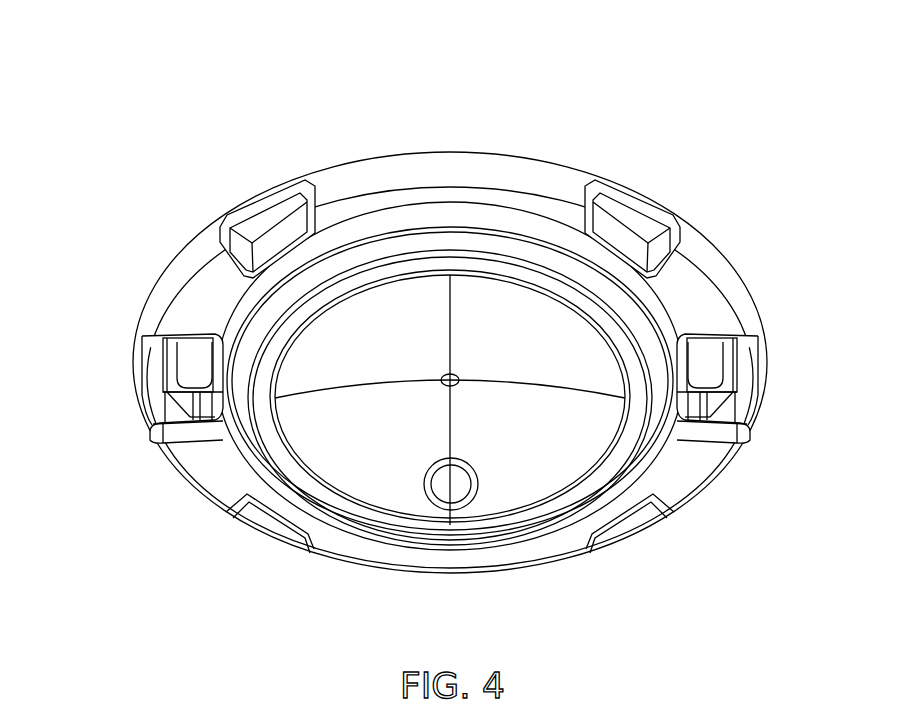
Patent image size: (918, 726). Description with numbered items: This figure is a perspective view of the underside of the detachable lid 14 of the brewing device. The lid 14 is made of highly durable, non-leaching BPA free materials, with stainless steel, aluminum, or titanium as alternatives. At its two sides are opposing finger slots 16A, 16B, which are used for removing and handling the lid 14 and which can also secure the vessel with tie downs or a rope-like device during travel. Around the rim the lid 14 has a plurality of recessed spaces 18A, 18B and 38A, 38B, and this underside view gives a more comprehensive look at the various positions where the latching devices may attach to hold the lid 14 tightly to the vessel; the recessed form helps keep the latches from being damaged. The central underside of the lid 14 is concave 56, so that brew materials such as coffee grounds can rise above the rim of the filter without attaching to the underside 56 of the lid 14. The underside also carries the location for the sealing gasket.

The lid 14 is at (430, 168).
The finger slot 16A is at (143, 357).
The finger slot 16B is at (753, 352).
The recessed space 18A is at (258, 198).
The recessed space 18B is at (635, 209).
The recessed space 38A is at (287, 517).
The recessed space 38B is at (617, 522).
The concave underside 56 is at (400, 396).